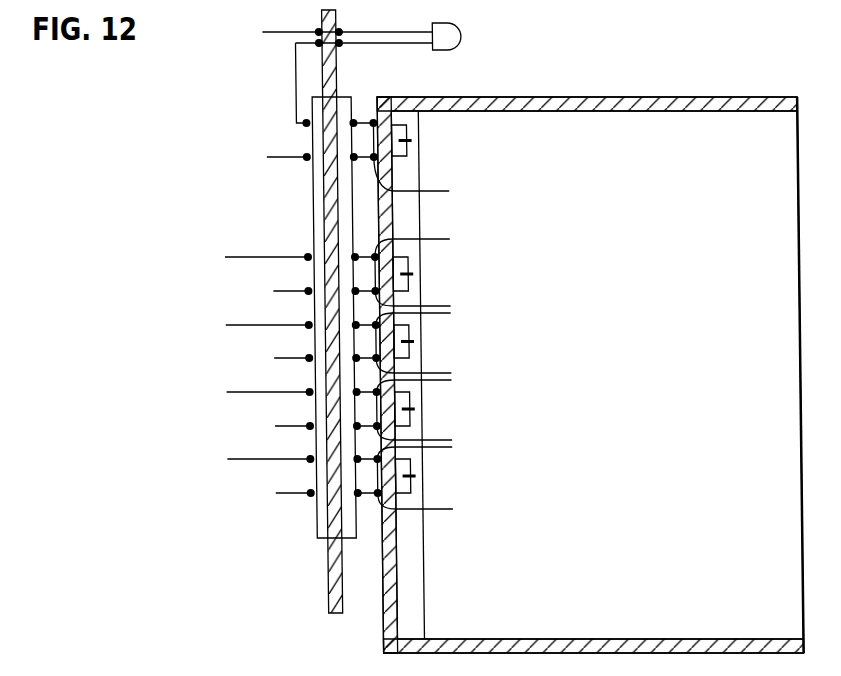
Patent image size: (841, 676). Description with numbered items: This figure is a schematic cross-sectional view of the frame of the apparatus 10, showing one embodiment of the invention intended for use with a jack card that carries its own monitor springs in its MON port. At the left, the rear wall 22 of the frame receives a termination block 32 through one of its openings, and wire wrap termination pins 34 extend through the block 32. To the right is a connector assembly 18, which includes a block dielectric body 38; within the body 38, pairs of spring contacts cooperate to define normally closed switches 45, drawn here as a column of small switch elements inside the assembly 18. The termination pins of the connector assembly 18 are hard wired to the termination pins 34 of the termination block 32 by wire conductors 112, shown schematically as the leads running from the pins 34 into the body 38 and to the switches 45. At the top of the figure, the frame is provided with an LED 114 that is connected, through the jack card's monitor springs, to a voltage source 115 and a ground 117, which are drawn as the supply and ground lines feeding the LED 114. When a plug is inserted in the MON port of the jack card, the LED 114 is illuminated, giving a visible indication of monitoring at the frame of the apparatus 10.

The apparatus 10 is at (749, 79).
The connector assembly 18 is at (569, 94).
The rear wall 22 is at (331, 578).
The termination block 32 is at (317, 520).
The wire wrap termination pin 34 is at (291, 158).
The block dielectric body 38 is at (385, 211).
The normally closed switch 45 is at (412, 140).
The wire conductor 112 is at (373, 121).
The LED 114 is at (451, 50).
The voltage source 115 is at (282, 33).
The ground 117 is at (300, 157).